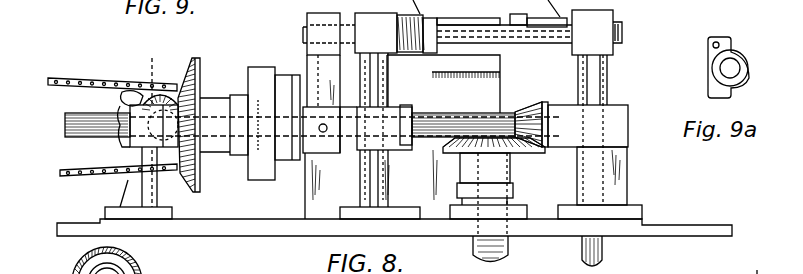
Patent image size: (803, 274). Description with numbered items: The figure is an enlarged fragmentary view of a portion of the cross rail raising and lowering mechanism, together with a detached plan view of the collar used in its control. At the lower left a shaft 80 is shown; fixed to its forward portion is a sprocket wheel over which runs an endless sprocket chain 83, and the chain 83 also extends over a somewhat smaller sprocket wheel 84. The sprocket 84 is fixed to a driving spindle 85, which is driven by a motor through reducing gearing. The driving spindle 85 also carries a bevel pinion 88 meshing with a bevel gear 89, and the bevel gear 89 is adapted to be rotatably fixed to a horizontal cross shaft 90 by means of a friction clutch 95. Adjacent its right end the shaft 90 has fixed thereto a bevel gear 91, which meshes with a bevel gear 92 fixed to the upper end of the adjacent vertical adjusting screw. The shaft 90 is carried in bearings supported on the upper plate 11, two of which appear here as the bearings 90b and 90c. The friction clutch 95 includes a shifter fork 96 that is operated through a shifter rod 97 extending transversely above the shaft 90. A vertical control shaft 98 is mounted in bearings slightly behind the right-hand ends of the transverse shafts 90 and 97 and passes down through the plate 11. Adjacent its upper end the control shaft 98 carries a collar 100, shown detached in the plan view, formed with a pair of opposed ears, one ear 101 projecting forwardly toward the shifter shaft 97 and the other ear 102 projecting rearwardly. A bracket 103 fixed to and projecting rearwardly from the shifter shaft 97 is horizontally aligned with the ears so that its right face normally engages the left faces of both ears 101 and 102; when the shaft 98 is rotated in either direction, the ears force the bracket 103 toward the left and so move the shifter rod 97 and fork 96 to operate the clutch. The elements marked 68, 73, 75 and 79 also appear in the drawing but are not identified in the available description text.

In FIG. 8, the upper plate 11 is at (700, 225).
In FIG. 8, the shaft 68 is at (468, 255).
In FIG. 8, the bracket 73 is at (761, 263).
In FIG. 8, the hub 75 is at (149, 269).
In FIG. 8, the ring 79 is at (75, 270).
In FIG. 8, the shaft 80 is at (128, 262).
In FIG. 8, the endless sprocket chain 83 is at (70, 78).
In FIG. 8, the sprocket wheel 84 is at (130, 90).
In FIG. 8, the driving spindle 85 is at (148, 124).
In FIG. 8, the bevel pinion 88 is at (176, 62).
In FIG. 8, the bevel gear 89 is at (196, 62).
In FIG. 8, the cross shaft 90 is at (92, 140).
In FIG. 8, the bearing 90b is at (128, 190).
In FIG. 8, the bearing 90c is at (620, 165).
In FIG. 8, the bevel gear 91 is at (522, 101).
In FIG. 8, the bevel gear 92 is at (530, 150).
In FIG. 8, the friction clutch 95 is at (258, 67).
In FIG. 8, the shifter fork 96 is at (310, 150).
In FIG. 8, the shifter rod 97 is at (487, 18).
In FIG. 8, the vertical control shaft 98 is at (603, 250).
In FIG. 9A, the collar 100 is at (747, 63).
In FIG. 9A, the ear 101 is at (716, 88).
In FIG. 9A, the ear 102 is at (718, 38).
In FIG. 8, the bracket 103 is at (553, 43).